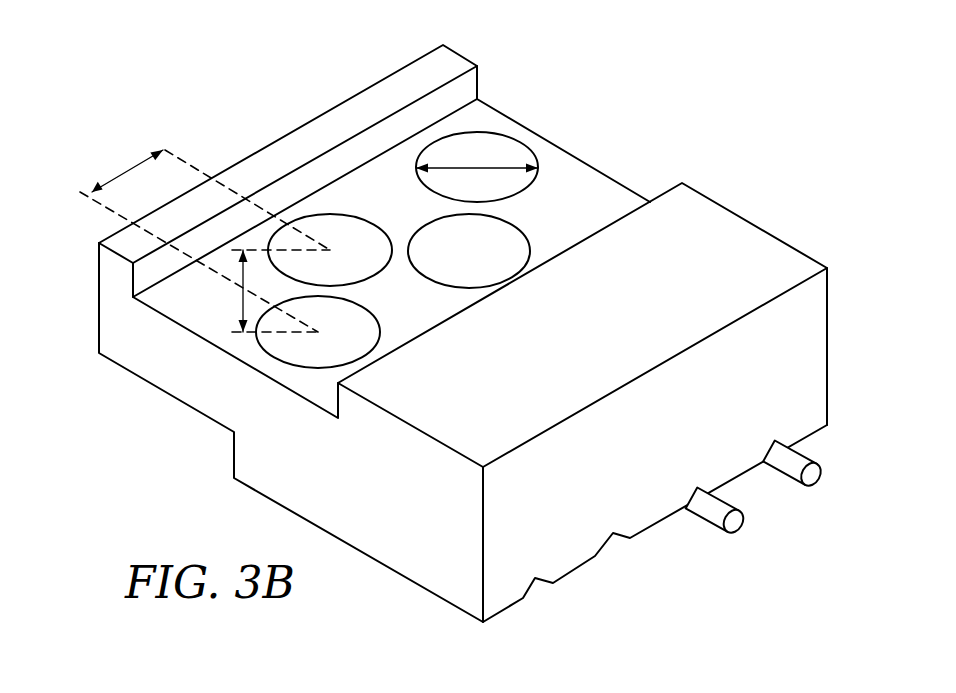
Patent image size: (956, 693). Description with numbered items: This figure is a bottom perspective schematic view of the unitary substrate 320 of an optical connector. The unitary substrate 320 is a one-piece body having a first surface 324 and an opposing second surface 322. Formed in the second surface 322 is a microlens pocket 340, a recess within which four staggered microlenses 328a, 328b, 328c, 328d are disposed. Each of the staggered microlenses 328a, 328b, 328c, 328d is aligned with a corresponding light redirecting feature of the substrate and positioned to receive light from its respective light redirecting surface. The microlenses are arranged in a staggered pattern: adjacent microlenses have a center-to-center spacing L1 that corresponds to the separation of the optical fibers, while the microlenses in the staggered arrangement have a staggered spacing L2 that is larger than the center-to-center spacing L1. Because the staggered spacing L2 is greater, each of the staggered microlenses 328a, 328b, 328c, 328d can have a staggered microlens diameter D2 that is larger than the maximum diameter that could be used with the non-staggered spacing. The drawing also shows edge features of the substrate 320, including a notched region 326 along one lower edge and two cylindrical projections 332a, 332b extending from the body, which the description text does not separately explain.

The unitary substrate 320 is at (117, 339).
The second surface 322 is at (690, 210).
The first surface 324 is at (260, 492).
The bottom edge notches 326 is at (617, 540).
The staggered microlens 328a is at (498, 147).
The staggered microlens 328b is at (510, 255).
The staggered microlens 328c is at (344, 228).
The staggered microlens 328d is at (362, 337).
The pin 332a is at (797, 468).
The pin 332b is at (710, 513).
The microlens pocket 340 is at (585, 148).
The staggered microlens diameter D2 is at (467, 168).
The center-to-center spacing L1 is at (127, 173).
The staggered spacing L2 is at (238, 300).